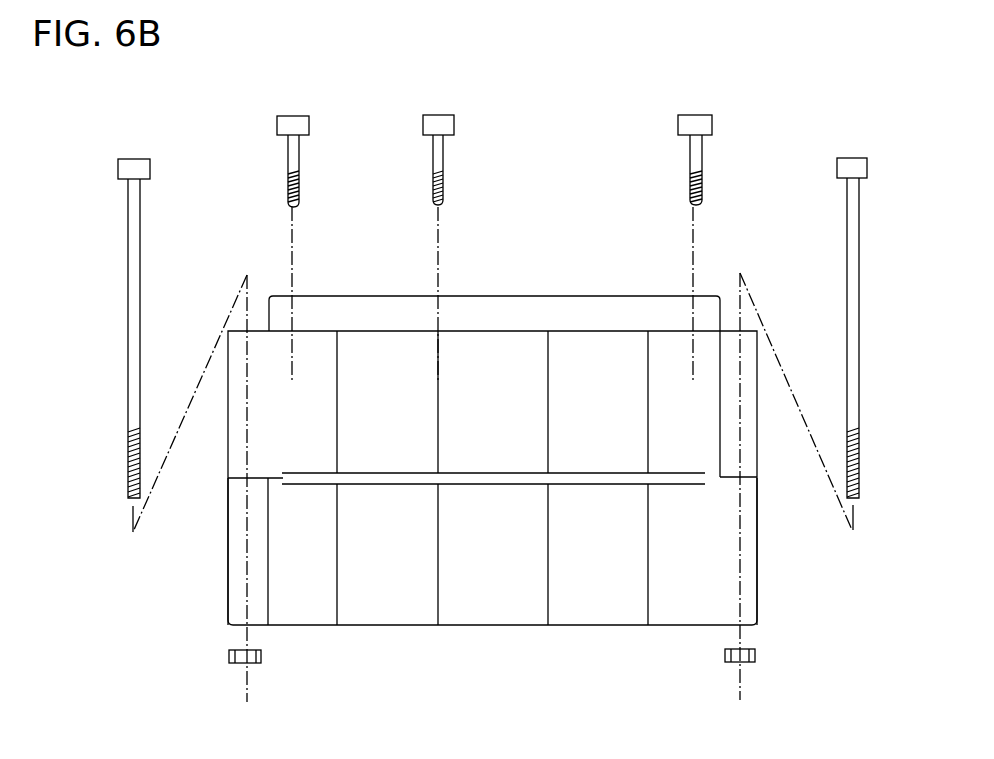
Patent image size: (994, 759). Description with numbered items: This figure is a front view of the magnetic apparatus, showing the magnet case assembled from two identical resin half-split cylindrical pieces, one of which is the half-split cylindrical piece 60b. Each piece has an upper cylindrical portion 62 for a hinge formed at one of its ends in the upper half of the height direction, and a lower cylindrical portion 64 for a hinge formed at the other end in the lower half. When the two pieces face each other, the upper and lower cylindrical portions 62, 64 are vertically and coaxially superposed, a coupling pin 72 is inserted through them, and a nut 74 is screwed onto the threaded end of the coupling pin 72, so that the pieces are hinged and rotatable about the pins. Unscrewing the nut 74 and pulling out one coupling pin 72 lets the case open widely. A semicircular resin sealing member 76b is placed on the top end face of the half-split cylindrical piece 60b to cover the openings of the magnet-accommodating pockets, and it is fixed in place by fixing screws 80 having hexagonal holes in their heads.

The half-split cylindrical piece 60b is at (499, 605).
The upper cylindrical portion for a hinge 62 is at (238, 433).
The lower cylindrical portion for a hinge 64 is at (238, 575).
The coupling pin 72 is at (136, 168).
The nut 74 is at (262, 657).
The sealing member 76b is at (505, 318).
The fixing screw 80 is at (293, 125).